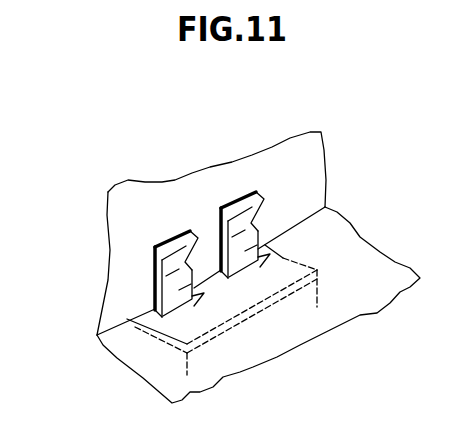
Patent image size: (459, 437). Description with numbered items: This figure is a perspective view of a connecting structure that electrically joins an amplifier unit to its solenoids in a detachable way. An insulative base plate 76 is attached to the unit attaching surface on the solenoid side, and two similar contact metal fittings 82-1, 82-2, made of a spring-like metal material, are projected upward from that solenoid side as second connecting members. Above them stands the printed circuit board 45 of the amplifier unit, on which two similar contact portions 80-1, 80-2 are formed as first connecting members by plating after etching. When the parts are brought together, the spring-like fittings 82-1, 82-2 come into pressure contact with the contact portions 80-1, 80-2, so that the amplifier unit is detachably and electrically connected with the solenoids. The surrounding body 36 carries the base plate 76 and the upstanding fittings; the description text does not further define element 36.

The base member 36 is at (382, 267).
The printed circuit board 45 is at (312, 168).
The insulative base plate 76 is at (317, 270).
The contact portion 80-1 is at (113, 267).
The contact portion 80-2 is at (287, 206).
The contact metal fitting 82-1 is at (154, 276).
The contact metal fitting 82-2 is at (249, 252).